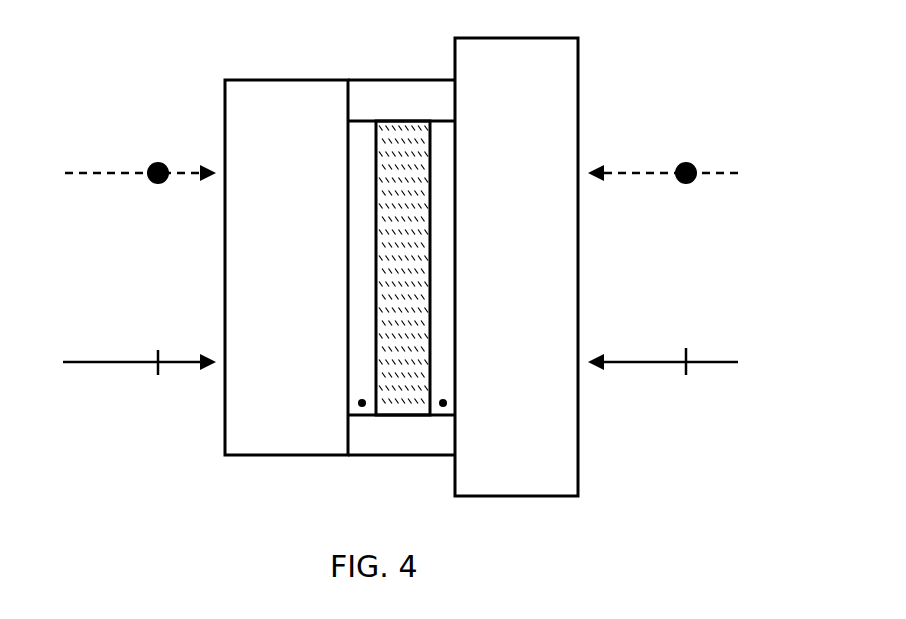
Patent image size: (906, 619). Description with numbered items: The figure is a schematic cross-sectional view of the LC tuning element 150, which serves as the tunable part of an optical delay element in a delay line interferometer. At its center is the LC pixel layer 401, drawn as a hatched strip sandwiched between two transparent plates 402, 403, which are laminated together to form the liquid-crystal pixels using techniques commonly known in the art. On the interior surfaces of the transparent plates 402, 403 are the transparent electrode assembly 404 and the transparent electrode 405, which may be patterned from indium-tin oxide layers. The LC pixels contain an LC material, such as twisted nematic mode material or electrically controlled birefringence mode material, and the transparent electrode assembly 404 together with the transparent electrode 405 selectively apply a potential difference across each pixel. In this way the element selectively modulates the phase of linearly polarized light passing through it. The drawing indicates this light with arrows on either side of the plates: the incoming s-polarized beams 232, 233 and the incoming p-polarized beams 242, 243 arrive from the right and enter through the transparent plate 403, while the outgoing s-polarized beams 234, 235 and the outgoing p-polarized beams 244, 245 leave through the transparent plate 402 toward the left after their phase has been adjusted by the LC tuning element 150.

The LC tuning element 150 is at (650, 44).
The LC pixel layer 401 is at (402, 158).
The transparent plate 402 is at (271, 131).
The transparent plate 403 is at (499, 86).
The transparent electrode assembly 404 is at (362, 403).
The transparent electrode 405 is at (443, 403).
The incoming s-polarized beam 232 is at (679, 148).
The incoming s-polarized beam 233 is at (723, 148).
The outgoing s-polarized beam 234 is at (140, 141).
The outgoing s-polarized beam 235 is at (162, 141).
The incoming p-polarized beam 242 is at (679, 337).
The incoming p-polarized beam 243 is at (726, 337).
The outgoing p-polarized beam 244 is at (139, 330).
The outgoing p-polarized beam 245 is at (157, 330).